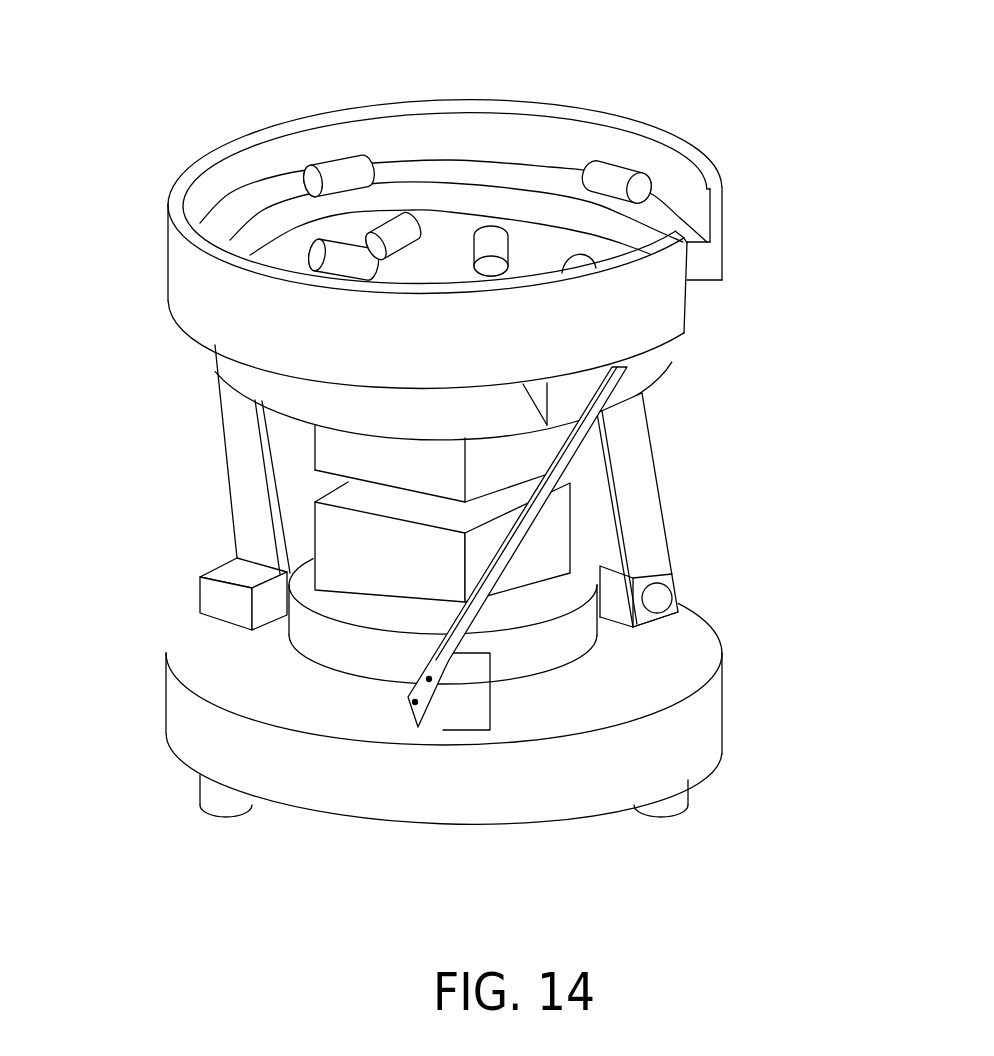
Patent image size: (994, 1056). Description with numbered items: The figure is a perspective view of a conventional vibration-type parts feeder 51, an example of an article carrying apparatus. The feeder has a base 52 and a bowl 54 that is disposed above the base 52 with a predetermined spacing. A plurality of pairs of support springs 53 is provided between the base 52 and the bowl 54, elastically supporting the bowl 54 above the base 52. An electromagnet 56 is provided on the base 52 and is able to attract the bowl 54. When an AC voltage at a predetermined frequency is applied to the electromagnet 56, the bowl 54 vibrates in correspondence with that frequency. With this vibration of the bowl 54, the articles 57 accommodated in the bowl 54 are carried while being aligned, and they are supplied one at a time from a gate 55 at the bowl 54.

The vibration-type parts feeder 51 is at (443, 416).
The base 52 is at (707, 730).
The support springs 53 is at (642, 490).
The bowl 54 is at (192, 278).
The gate 55 is at (723, 242).
The electromagnet 56 is at (340, 540).
The articles 57 is at (623, 177).